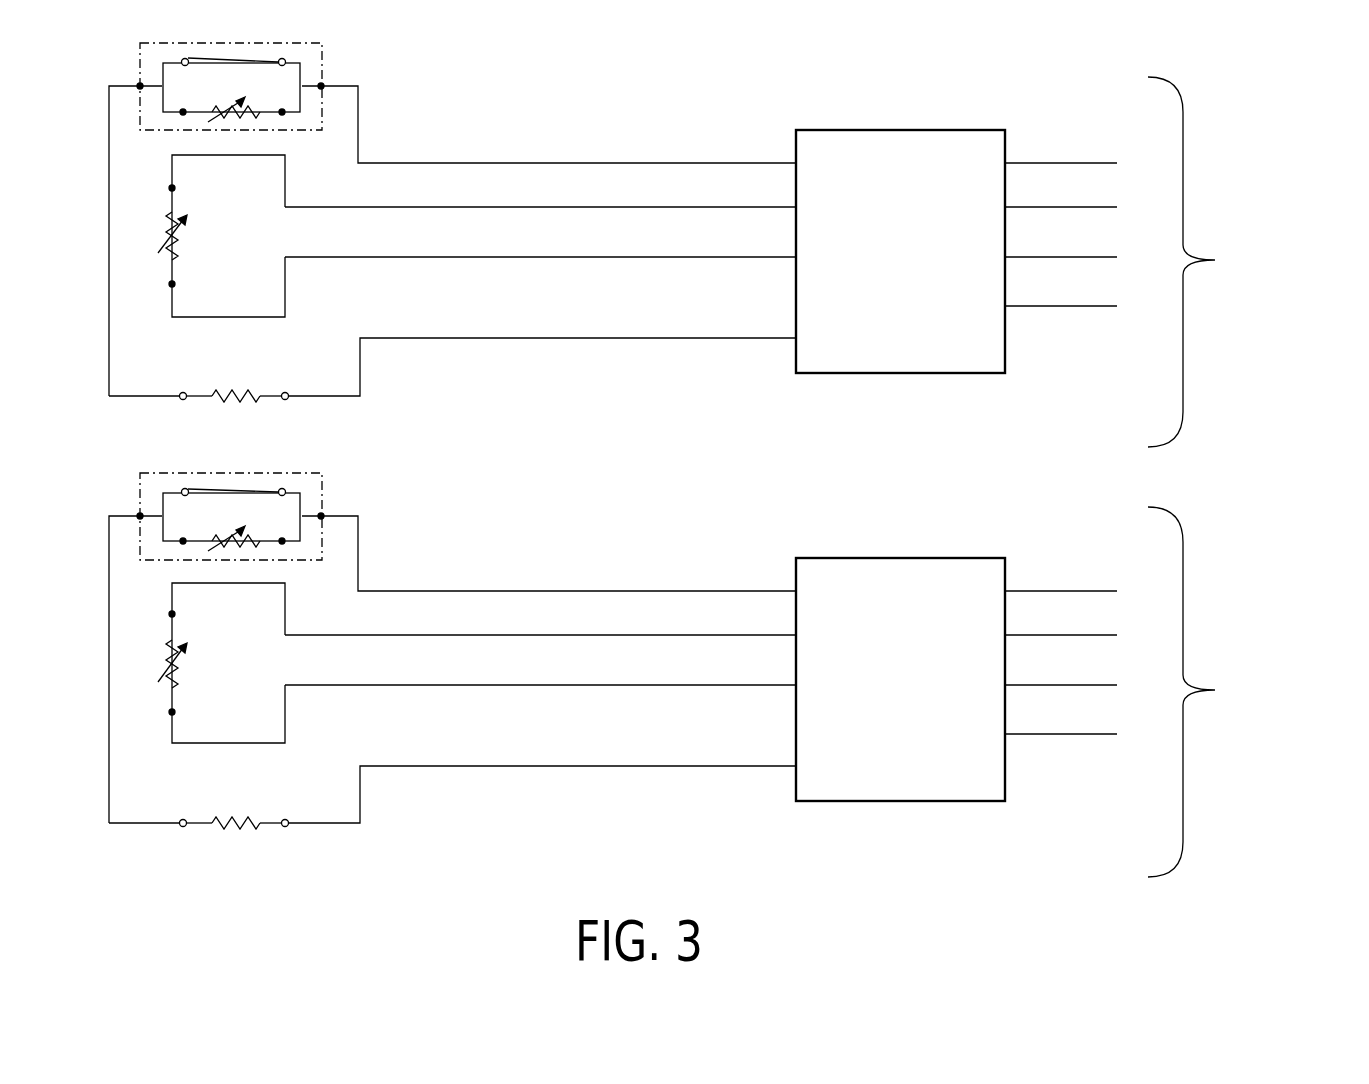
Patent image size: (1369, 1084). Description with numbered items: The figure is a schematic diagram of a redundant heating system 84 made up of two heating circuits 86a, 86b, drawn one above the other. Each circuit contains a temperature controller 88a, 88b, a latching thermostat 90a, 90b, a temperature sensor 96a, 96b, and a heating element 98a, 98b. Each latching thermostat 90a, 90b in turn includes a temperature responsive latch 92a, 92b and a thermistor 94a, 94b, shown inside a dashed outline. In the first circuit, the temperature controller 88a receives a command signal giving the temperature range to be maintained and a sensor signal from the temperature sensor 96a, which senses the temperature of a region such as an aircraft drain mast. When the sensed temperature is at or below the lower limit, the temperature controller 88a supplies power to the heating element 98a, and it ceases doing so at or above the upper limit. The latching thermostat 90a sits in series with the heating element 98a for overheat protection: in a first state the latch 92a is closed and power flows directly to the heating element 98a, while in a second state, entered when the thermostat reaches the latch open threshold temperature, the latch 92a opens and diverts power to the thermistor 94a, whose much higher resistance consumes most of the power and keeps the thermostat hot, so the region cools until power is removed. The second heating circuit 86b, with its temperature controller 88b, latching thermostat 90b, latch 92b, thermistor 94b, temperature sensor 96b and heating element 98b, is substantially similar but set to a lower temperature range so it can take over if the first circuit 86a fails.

The redundant heating system 84 is at (1310, 73).
The heating circuit 86a is at (1135, 262).
The heating circuit 86b is at (1135, 692).
The temperature controller 88a is at (900, 235).
The temperature controller 88b is at (900, 663).
The latching thermostat 90a is at (231, 114).
The latching thermostat 90b is at (233, 526).
The latch 92a is at (231, 85).
The latch 92b is at (243, 490).
The thermistor 94a is at (167, 137).
The thermistor 94b is at (167, 566).
The temperature sensor 96a is at (221, 236).
The temperature sensor 96b is at (221, 663).
The heating element 98a is at (257, 384).
The heating element 98b is at (258, 810).